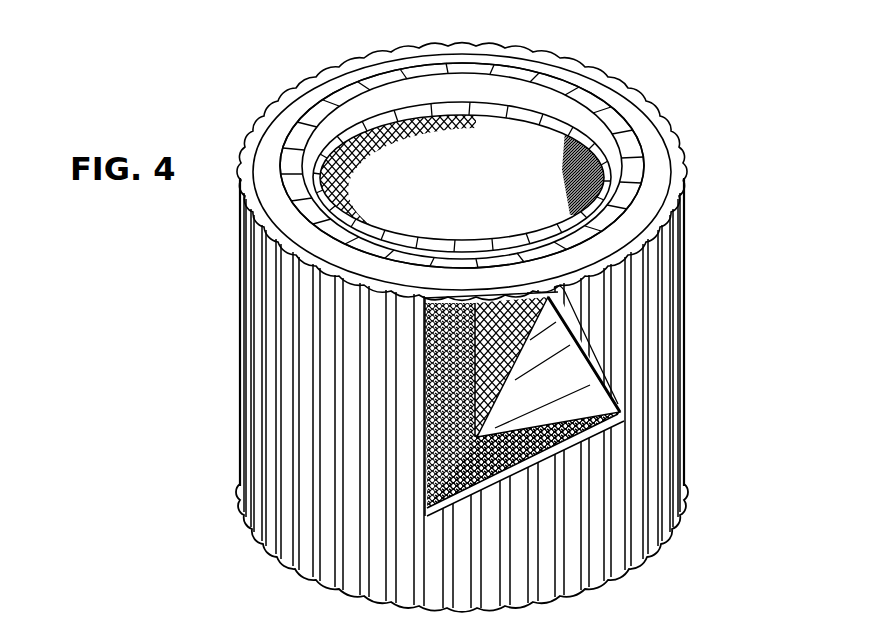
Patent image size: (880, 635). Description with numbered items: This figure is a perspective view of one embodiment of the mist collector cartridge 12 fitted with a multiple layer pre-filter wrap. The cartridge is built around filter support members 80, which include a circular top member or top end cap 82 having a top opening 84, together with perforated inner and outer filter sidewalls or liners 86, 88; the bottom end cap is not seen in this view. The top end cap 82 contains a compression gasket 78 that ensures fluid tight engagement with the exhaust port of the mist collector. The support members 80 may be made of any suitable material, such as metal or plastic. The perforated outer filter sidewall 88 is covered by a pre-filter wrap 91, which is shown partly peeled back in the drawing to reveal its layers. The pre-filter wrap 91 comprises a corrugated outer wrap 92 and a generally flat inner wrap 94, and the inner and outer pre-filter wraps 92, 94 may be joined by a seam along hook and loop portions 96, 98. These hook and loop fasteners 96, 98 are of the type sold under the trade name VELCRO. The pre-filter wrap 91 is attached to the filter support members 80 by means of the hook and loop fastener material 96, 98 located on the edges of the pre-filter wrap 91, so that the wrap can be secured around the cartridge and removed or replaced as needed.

The mist collector cartridge 12 is at (226, 132).
The compression gasket 78 is at (580, 90).
The filter support members 80 is at (290, 110).
The top end cap 82 is at (643, 133).
The top opening 84 is at (435, 155).
The perforated inner filter sidewall 86 is at (572, 170).
The perforated outer filter sidewall 88 is at (497, 307).
The pre-filter wrap 91 is at (598, 435).
The corrugated outer wrap 92 is at (682, 147).
The flat inner wrap 94 is at (633, 100).
The hook and loop portion 96 is at (470, 435).
The hook and loop portion 98 is at (535, 437).